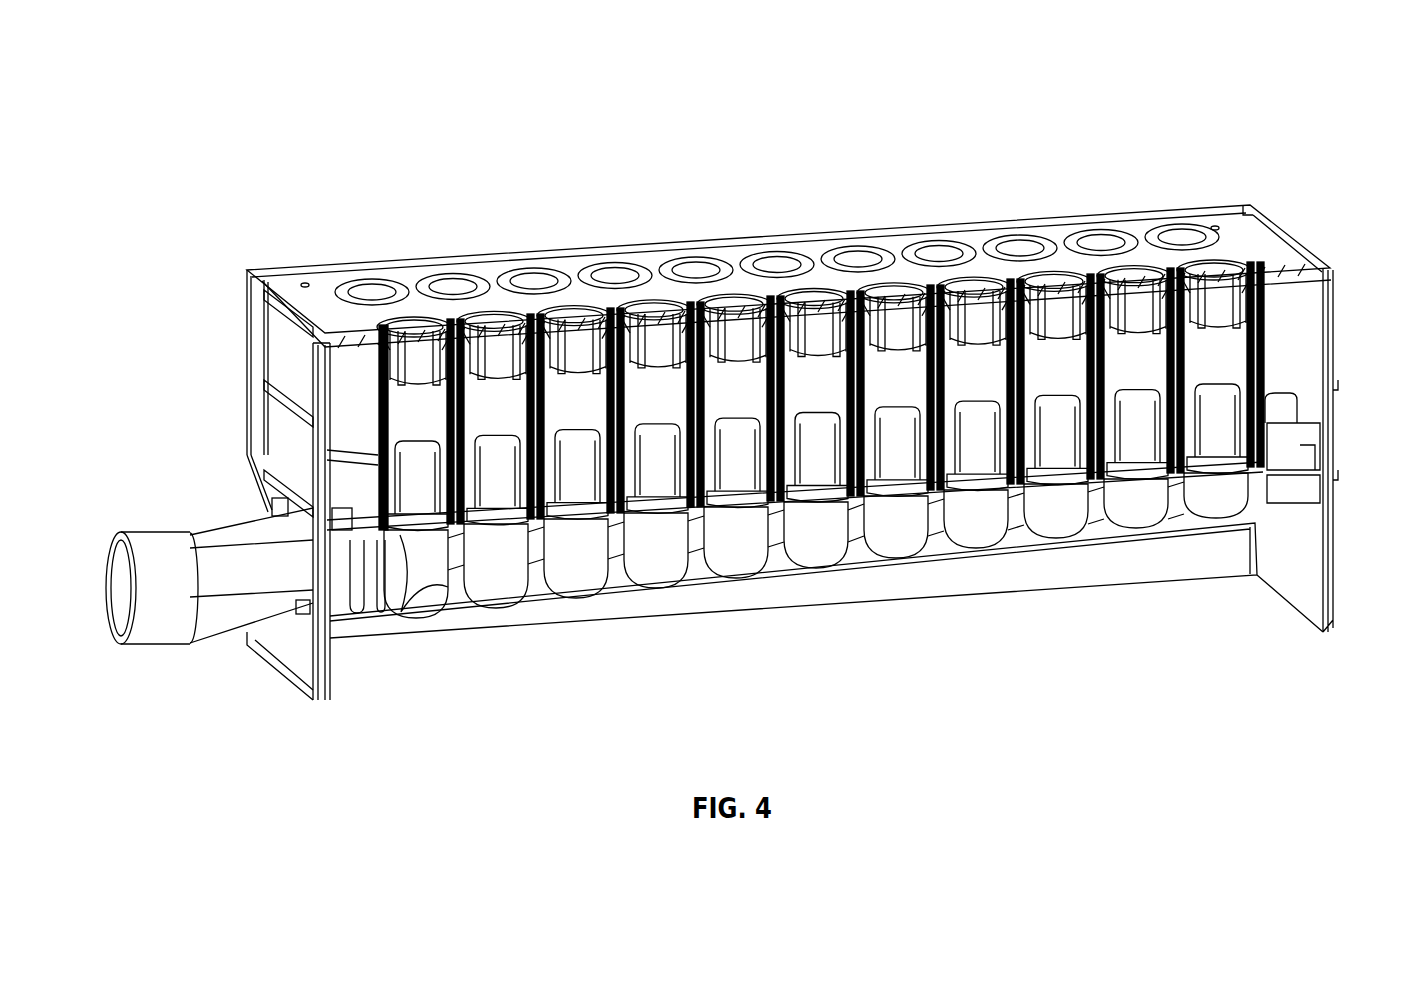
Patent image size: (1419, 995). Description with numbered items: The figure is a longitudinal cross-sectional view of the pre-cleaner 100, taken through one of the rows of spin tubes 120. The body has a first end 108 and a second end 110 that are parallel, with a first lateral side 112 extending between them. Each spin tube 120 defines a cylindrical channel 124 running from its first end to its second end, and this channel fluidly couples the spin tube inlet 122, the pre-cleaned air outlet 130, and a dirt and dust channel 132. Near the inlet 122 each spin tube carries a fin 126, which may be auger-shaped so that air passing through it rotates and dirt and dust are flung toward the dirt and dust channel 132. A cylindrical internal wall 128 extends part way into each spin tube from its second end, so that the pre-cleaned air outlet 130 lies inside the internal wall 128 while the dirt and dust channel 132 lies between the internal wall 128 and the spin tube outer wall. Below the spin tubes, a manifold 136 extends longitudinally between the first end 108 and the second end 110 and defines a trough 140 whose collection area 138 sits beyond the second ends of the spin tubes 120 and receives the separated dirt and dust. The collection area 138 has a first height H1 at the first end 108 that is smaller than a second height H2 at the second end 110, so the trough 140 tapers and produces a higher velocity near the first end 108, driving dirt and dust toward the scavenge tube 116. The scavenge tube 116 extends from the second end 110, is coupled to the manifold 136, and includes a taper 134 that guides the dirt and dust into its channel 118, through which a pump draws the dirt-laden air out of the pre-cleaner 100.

The pre-cleaner 100 is at (245, 114).
The first end 108 is at (1335, 325).
The second end 110 is at (262, 315).
The first lateral side 112 is at (1238, 230).
The scavenge tube 116 is at (162, 535).
The channel 118 is at (118, 596).
The spin tubes 120 is at (452, 286).
The spin tube inlet 122 is at (754, 259).
The cylindrical channel 124 is at (392, 430).
The fin 126 is at (884, 297).
The internal wall 128 is at (1003, 395).
The pre-cleaned air outlet 130 is at (584, 438).
The dirt and dust channel 132 is at (527, 442).
The taper 134 is at (234, 516).
The manifold 136 is at (1146, 541).
The collection area 138 is at (852, 556).
The trough 140 is at (585, 600).
The first height H1 is at (1256, 505).
The second height H2 is at (432, 582).